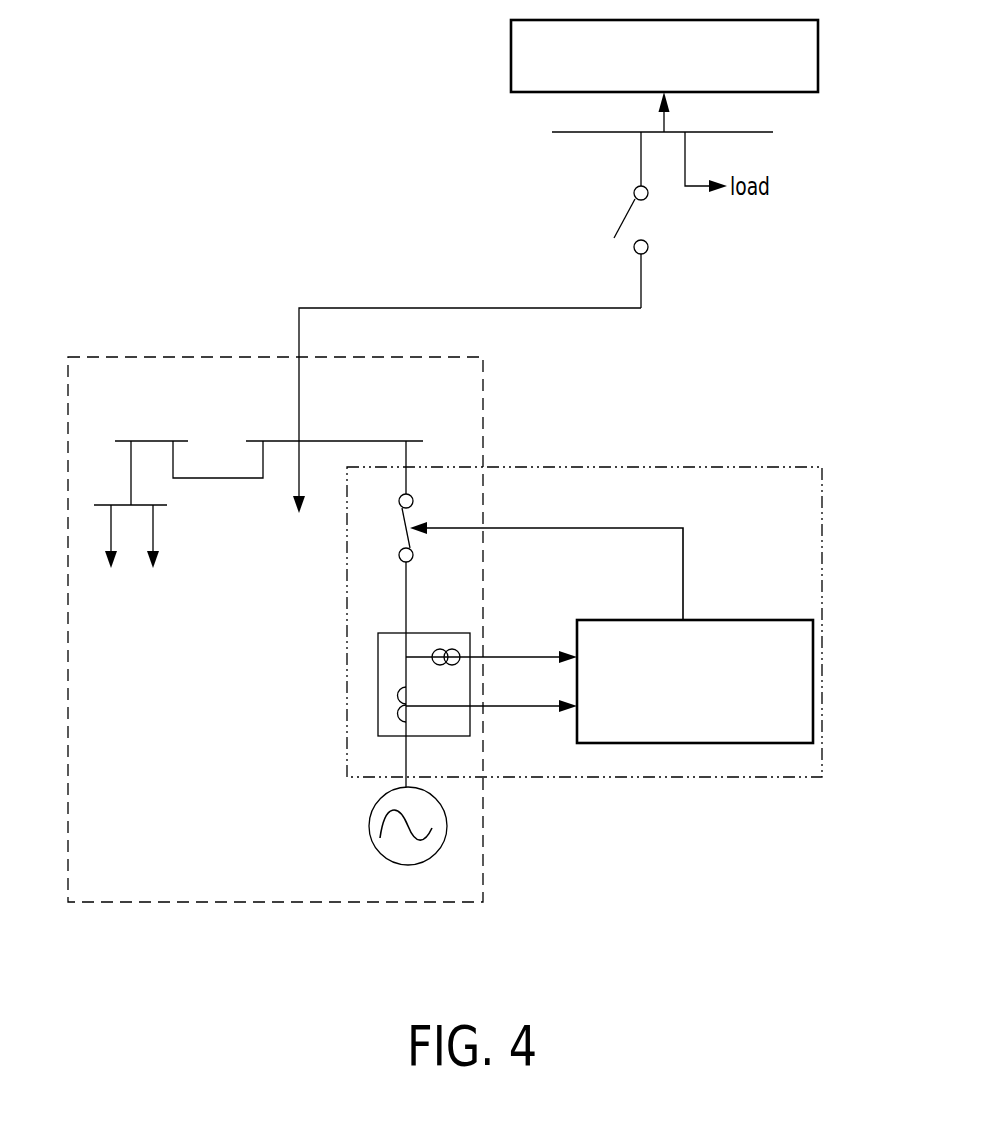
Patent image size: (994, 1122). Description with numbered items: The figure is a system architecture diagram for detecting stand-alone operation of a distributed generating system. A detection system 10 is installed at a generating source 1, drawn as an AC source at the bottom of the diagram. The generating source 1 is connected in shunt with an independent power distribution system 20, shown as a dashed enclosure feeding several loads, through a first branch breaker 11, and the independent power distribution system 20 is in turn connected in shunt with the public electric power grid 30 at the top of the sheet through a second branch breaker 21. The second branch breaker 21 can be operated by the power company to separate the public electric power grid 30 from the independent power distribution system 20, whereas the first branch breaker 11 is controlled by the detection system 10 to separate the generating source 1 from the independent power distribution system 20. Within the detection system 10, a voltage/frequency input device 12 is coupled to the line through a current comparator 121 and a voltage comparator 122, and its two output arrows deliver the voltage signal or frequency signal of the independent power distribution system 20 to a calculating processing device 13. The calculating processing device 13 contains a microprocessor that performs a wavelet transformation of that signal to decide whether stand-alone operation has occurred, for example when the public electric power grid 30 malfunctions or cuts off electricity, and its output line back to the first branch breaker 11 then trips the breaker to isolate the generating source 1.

The generating source 1 is at (382, 838).
The detection system 10 is at (712, 485).
The first branch breaker 11 is at (413, 502).
The voltage/frequency input device 12 is at (378, 688).
The current comparator 121 is at (403, 707).
The voltage comparator 122 is at (449, 650).
The calculating processing device 13 is at (717, 620).
The independent power distribution system 20 is at (228, 362).
The second branch breaker 21 is at (607, 216).
The public electric power grid 30 is at (512, 52).